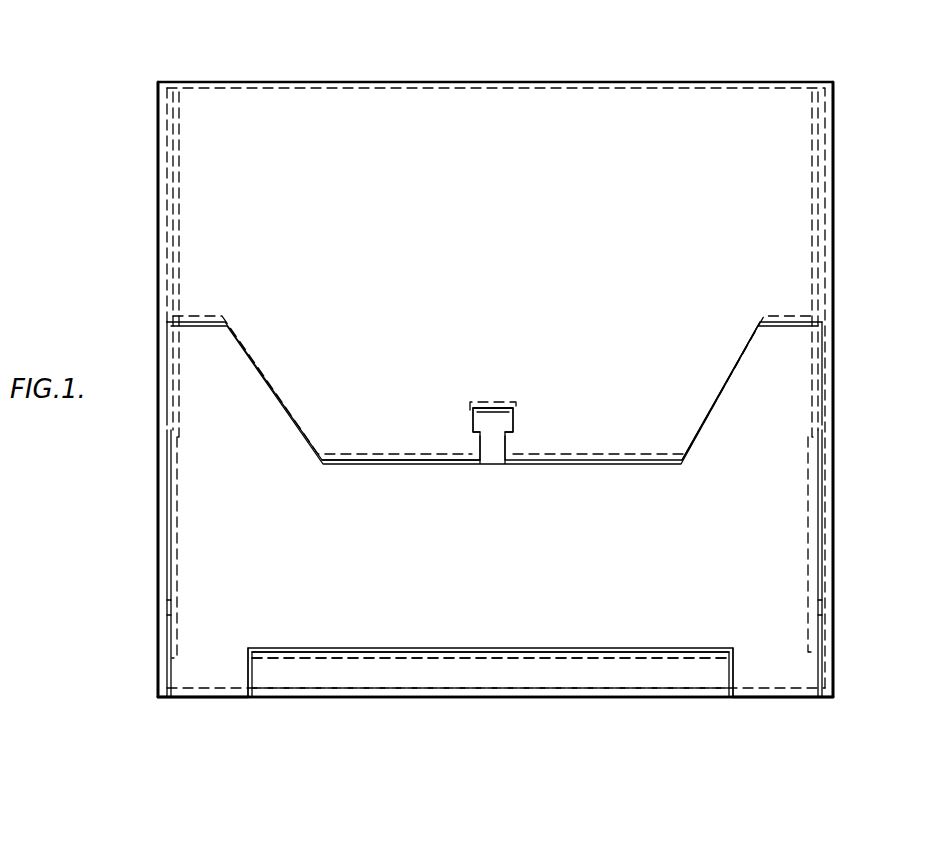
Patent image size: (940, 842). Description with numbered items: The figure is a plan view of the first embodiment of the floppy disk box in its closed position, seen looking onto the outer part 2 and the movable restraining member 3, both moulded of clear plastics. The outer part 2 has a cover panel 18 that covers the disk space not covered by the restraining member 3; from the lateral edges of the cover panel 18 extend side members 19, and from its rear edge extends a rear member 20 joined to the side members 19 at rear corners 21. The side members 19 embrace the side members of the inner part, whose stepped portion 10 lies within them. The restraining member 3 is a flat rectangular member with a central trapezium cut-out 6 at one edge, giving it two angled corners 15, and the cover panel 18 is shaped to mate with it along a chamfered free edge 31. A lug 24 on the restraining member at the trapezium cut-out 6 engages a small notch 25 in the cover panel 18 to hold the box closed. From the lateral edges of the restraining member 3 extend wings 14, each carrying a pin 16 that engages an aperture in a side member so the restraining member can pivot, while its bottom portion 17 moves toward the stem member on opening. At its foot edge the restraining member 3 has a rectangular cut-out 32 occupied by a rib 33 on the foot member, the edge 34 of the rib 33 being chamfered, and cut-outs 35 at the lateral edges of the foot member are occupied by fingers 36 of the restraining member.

The outer part 2 is at (242, 207).
The movable restraining member 3 is at (362, 603).
The central trapezium cut-out 6 is at (635, 460).
The stepped portion 10 is at (185, 170).
The wings 14 is at (178, 512).
The angled corners 15 is at (190, 344).
The pins 16 is at (160, 603).
The bottom portion 17 is at (318, 625).
The cover panel 18 is at (474, 255).
The side members 19 is at (158, 196).
The rear member 20 is at (628, 80).
The rear corners 21 is at (160, 84).
The lug 24 is at (495, 412).
The notch 25 is at (516, 415).
The chamfered free edge 31 is at (418, 450).
The rectangular cut-out 32 is at (470, 650).
The rib 33 is at (538, 672).
The edge of the rib 34 is at (626, 658).
The cut-outs 35 is at (262, 688).
The fingers 36 is at (190, 700).